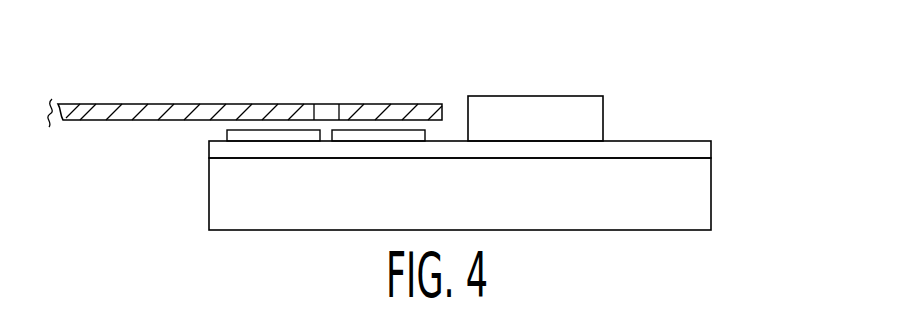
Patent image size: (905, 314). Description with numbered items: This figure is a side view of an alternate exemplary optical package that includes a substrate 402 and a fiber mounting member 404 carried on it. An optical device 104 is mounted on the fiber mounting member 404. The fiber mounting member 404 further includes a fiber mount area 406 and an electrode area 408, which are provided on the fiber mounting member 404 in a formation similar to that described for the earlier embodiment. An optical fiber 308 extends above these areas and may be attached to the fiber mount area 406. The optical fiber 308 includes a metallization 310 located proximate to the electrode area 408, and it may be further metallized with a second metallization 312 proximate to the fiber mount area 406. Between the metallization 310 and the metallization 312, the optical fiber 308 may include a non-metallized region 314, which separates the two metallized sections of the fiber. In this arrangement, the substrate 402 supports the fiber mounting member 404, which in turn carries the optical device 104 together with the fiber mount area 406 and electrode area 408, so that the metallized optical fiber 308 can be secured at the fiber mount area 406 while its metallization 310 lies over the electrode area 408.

The optical device 104 is at (550, 95).
The optical fiber 308 is at (245, 76).
The metallization 310 is at (358, 105).
The metallization 312 is at (258, 103).
The non-metallized region 314 is at (325, 106).
The substrate 402 is at (711, 192).
The fiber mounting member 404 is at (652, 140).
The fiber mount area 406 is at (227, 130).
The electrode area 408 is at (425, 137).